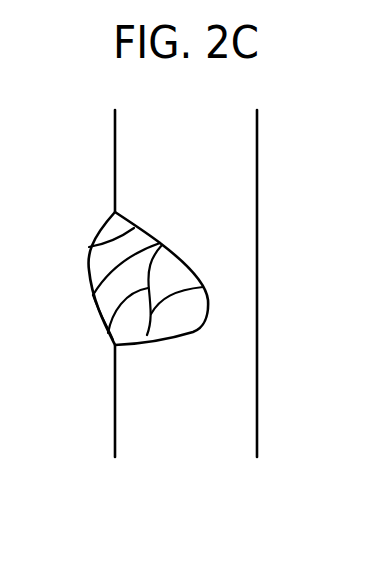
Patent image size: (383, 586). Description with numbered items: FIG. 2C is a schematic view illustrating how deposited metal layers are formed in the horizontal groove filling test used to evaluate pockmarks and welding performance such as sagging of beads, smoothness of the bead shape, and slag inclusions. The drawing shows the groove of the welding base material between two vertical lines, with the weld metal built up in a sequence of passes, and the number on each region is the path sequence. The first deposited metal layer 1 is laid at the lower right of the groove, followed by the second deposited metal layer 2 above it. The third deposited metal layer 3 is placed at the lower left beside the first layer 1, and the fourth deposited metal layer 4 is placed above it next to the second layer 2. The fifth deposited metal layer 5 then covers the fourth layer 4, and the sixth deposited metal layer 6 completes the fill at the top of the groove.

The first deposited metal layer 1 is at (177, 306).
The second deposited metal layer 2 is at (163, 290).
The third deposited metal layer 3 is at (128, 310).
The fourth deposited metal layer 4 is at (114, 304).
The fifth deposited metal layer 5 is at (125, 247).
The sixth deposited metal layer 6 is at (117, 228).